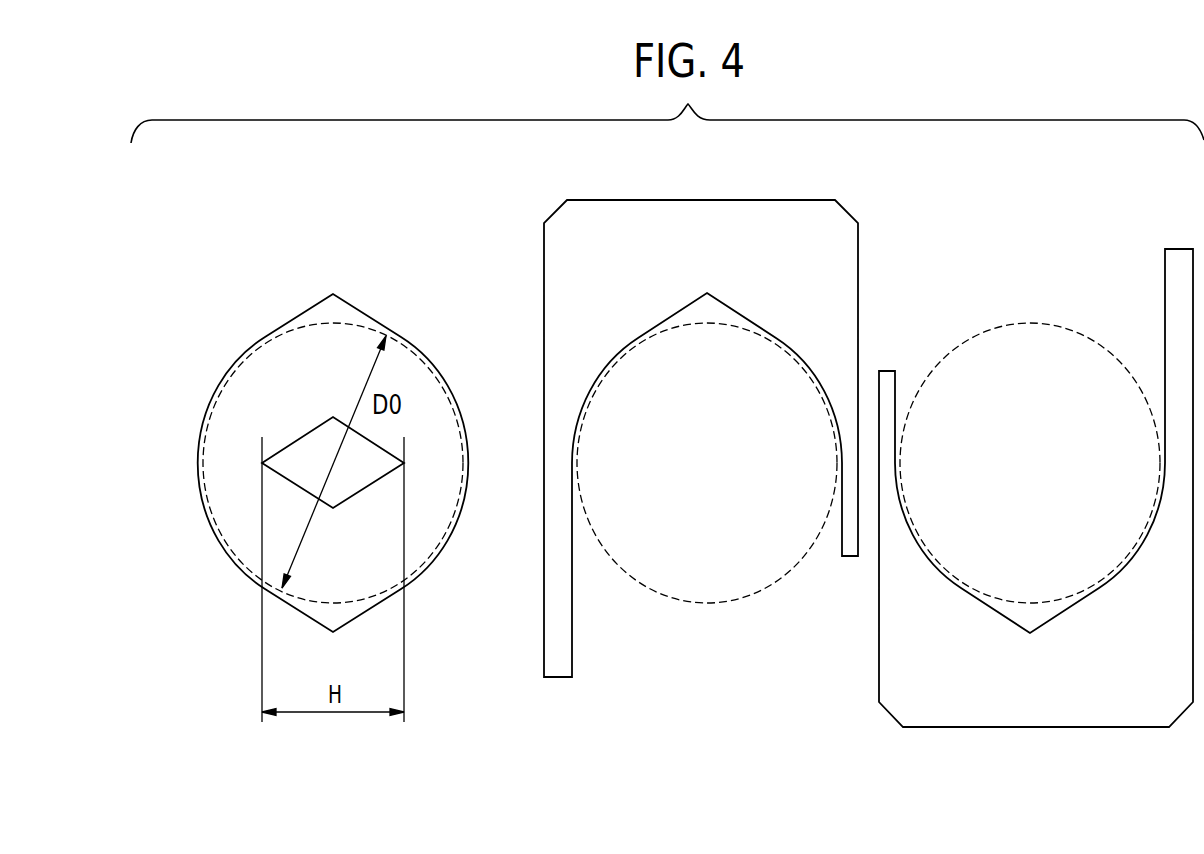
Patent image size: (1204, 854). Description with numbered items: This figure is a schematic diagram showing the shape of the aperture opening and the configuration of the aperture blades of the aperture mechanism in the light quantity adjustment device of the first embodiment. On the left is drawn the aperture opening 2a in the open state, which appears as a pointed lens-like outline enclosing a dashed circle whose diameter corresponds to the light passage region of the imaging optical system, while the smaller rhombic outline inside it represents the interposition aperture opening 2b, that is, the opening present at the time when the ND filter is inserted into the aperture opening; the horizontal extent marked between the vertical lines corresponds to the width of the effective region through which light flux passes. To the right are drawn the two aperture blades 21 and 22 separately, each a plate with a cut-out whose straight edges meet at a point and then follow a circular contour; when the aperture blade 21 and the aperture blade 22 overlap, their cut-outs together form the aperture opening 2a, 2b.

The aperture opening in the open state 2a is at (229, 365).
The interposition aperture opening 2b is at (287, 436).
The aperture blade 21 is at (562, 290).
The aperture blade 22 is at (1010, 705).